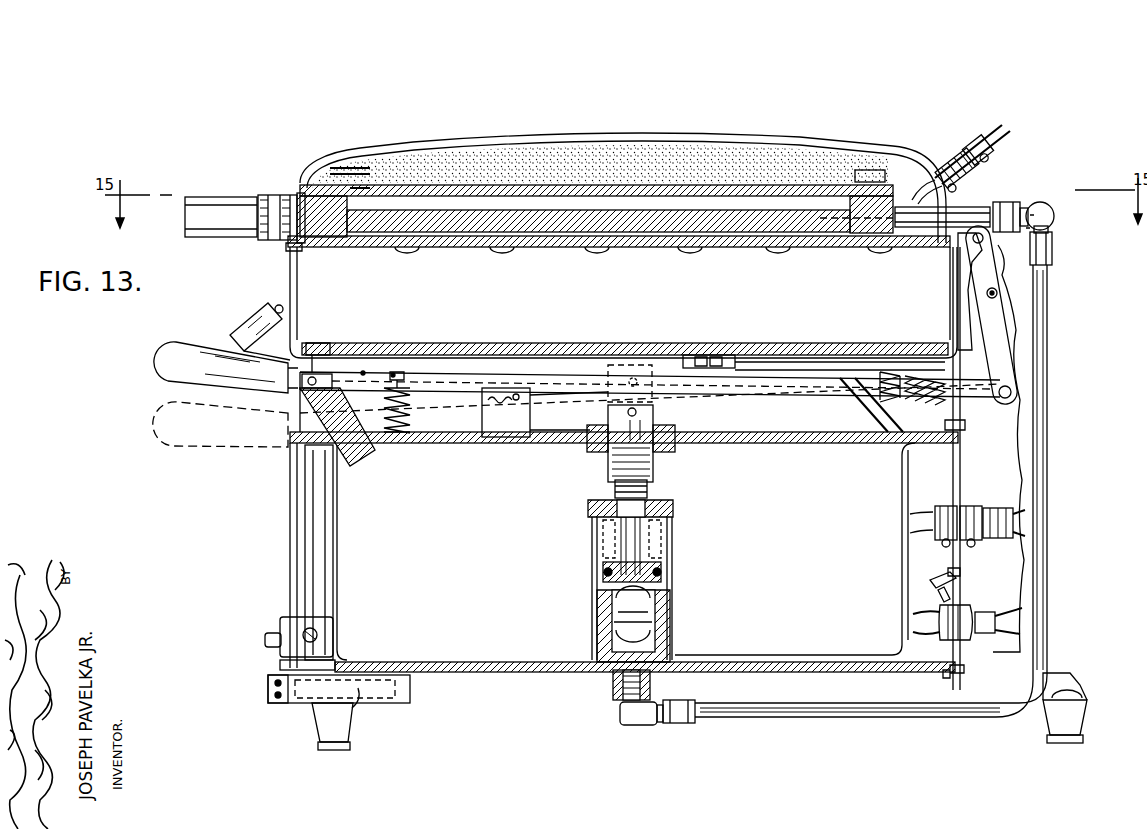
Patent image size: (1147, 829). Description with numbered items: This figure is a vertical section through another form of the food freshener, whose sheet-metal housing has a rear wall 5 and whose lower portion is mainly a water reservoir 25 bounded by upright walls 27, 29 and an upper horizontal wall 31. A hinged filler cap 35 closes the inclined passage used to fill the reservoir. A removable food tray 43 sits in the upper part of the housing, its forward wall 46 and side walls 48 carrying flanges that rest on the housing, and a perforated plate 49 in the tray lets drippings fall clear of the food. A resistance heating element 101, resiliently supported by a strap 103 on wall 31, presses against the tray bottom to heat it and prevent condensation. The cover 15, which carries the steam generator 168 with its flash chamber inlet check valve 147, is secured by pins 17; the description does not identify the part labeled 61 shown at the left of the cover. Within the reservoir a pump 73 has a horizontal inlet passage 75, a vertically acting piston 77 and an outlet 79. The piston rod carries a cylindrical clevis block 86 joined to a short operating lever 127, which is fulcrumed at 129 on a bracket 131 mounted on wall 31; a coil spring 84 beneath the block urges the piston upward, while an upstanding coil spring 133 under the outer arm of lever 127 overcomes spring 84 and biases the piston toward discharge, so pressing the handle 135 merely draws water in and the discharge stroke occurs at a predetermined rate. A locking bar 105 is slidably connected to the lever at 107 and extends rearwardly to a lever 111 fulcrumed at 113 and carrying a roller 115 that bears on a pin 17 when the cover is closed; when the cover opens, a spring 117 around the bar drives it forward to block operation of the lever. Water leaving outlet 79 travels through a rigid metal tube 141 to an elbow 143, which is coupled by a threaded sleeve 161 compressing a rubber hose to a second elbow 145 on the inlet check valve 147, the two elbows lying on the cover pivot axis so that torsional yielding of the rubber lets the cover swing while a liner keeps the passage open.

The cover 15 is at (640, 132).
The inlet tube 61 is at (215, 198).
The steam generator 168 is at (292, 202).
The pins 17 is at (968, 208).
The flash chamber inlet check valve 147 is at (1004, 204).
The elbow 145 is at (1043, 204).
The threaded sleeve 161 is at (1054, 218).
The elbow 143 is at (1054, 240).
The roller 115 is at (968, 260).
The fulcrum 113 is at (985, 294).
The lever 111 is at (1012, 364).
The spring 117 is at (892, 396).
The forward wall 46 is at (288, 263).
The food tray 43 is at (303, 291).
The filler cap 35 is at (252, 322).
The slidable connection 107 is at (312, 356).
The handle 135 is at (168, 360).
The perforated plate 49 is at (470, 344).
The side walls 48 is at (630, 311).
The resistance heating element 101 is at (798, 356).
The fulcrum 129 is at (483, 398).
The coil spring 133 is at (395, 440).
The bracket 131 is at (484, 438).
The operating lever 127 is at (556, 415).
The clevis block 86 is at (656, 420).
The locking bar 105 is at (745, 388).
The strap 103 is at (835, 410).
The upper horizontal wall 31 is at (720, 444).
The coil spring 84 is at (650, 492).
The rear wall 5 is at (961, 442).
The upright wall 27 is at (336, 545).
The water reservoir 25 is at (800, 560).
The upright wall 29 is at (898, 548).
The pump 73 is at (592, 577).
The piston 77 is at (660, 572).
The inlet passage 75 is at (590, 618).
The outlet 79 is at (650, 683).
The metal tube 141 is at (788, 718).